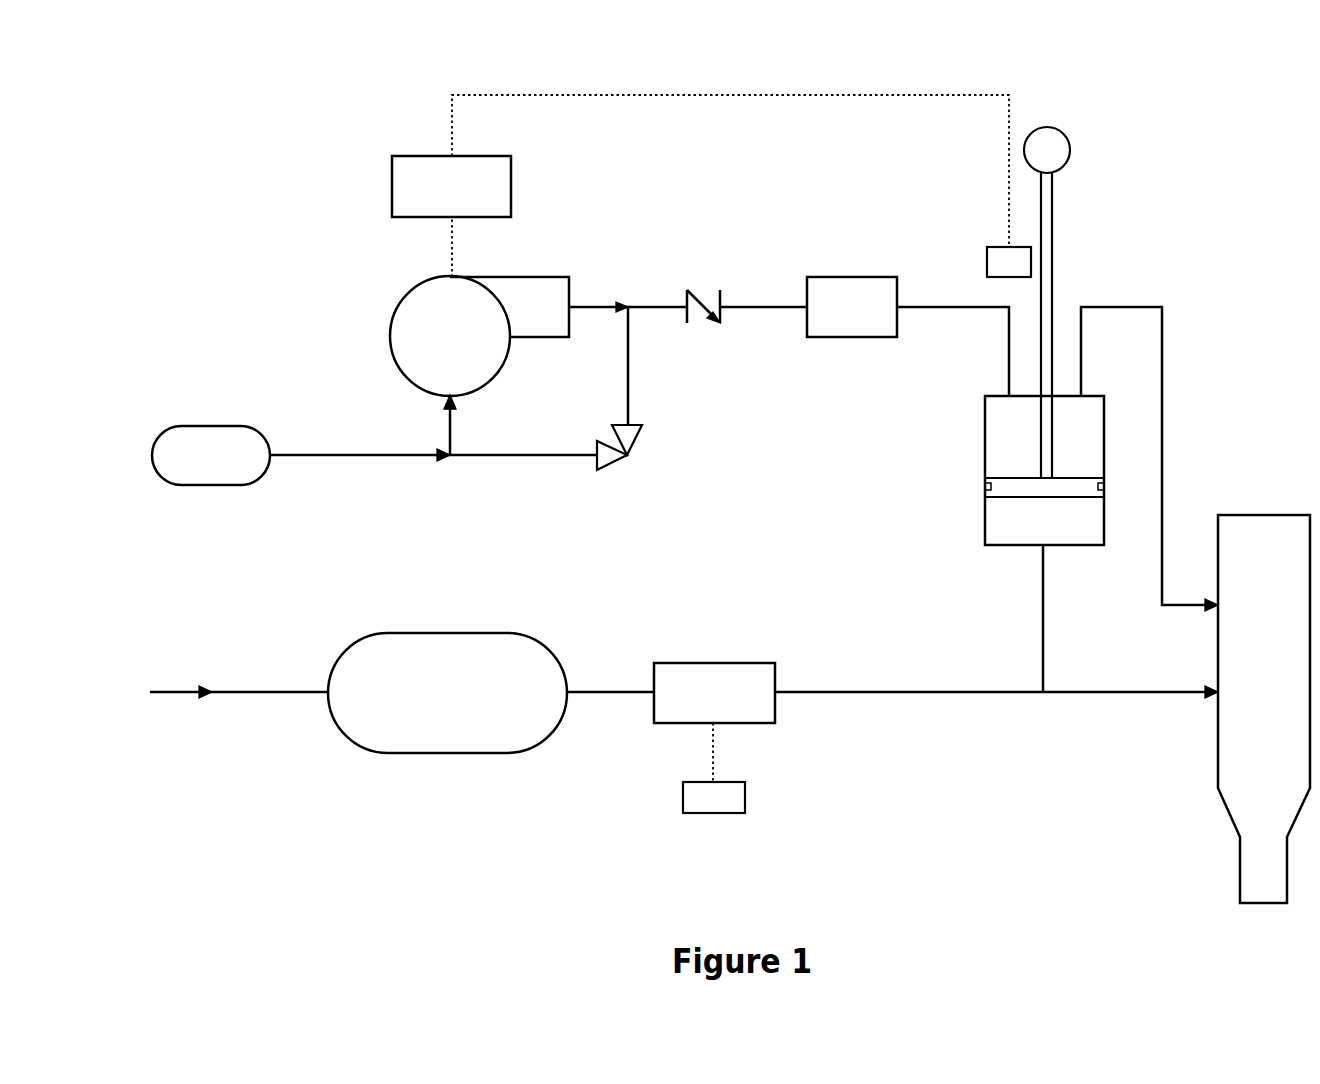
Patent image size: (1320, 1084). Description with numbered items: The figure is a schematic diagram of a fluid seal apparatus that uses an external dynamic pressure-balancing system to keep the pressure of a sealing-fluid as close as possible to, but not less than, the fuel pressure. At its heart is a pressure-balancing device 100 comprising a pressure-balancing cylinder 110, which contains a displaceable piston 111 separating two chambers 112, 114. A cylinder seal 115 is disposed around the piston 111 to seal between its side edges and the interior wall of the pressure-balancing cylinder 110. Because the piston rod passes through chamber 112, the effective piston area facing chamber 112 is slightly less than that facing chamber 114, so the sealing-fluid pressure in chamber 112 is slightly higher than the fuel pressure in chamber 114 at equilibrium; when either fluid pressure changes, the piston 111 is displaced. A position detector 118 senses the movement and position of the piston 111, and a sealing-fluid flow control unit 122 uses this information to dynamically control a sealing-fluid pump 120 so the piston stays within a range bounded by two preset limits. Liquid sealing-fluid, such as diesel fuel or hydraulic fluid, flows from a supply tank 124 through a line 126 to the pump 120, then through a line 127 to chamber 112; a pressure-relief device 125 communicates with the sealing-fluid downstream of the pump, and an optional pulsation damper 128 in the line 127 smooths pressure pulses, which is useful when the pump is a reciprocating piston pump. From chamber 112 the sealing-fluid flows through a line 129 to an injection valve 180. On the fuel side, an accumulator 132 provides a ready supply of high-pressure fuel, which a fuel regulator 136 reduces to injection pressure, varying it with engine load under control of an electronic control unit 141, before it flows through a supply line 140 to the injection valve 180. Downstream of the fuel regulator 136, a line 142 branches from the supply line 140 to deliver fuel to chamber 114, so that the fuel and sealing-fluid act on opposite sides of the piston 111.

The pressure-balancing device 100 is at (1066, 336).
The pressure-balancing cylinder 110 is at (985, 450).
The piston 111 is at (1013, 487).
The chamber 112 is at (1003, 423).
The chamber 114 is at (1030, 525).
The cylinder seal 115 is at (988, 487).
The position detector 118 is at (995, 262).
The sealing-fluid pump 120 is at (430, 348).
The sealing-fluid flow control unit 122 is at (431, 207).
The supply tank 124 is at (191, 467).
The pressure-relief device 125 is at (610, 458).
The line 126 is at (360, 455).
The line 127 is at (748, 307).
The pulsation damper 128 is at (832, 319).
The line 129 is at (1165, 355).
The accumulator 132 is at (428, 704).
The fuel regulator 136 is at (694, 704).
The supply line 140 is at (983, 692).
The electronic control unit 141 is at (745, 795).
The line 142 is at (1040, 628).
The injection valve 180 is at (1244, 722).